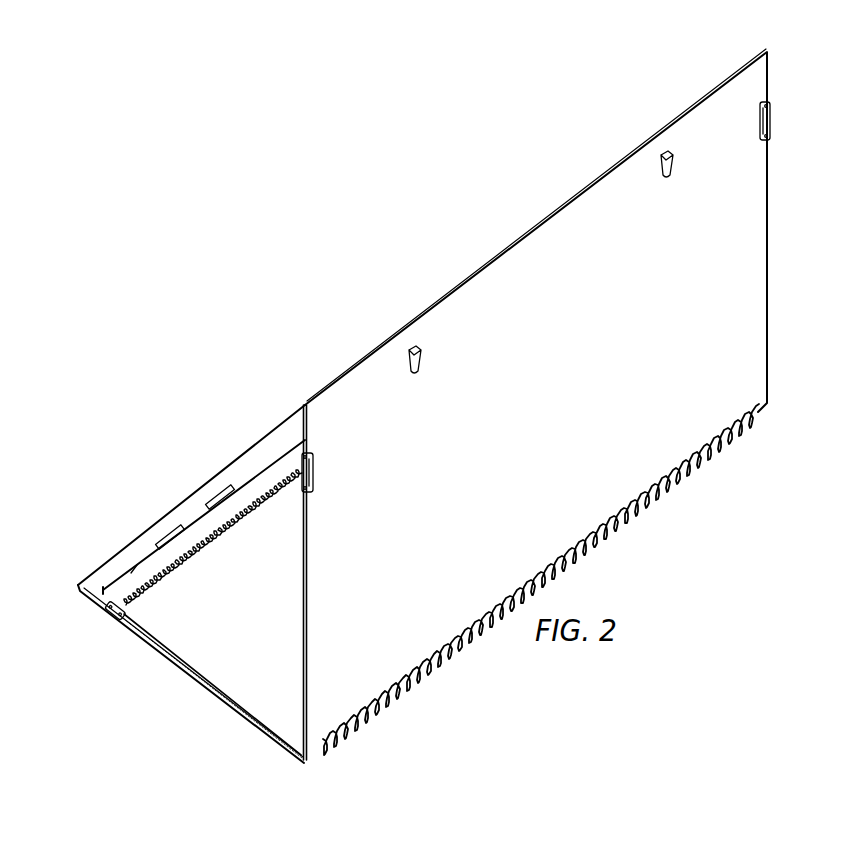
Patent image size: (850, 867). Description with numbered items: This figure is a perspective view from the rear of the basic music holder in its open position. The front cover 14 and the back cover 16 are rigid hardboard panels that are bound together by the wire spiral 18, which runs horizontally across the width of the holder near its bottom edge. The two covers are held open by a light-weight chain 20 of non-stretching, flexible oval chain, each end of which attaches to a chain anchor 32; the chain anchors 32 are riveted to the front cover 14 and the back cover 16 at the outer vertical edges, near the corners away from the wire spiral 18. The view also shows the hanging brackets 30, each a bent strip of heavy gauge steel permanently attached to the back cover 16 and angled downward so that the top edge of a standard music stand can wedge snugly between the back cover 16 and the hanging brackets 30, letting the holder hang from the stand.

The front cover 14 is at (142, 530).
The back cover 16 is at (768, 222).
The wire spiral 18 is at (323, 763).
The chain 20 is at (215, 540).
The hanging bracket 30 is at (421, 361).
The chain anchor 32 is at (772, 120).